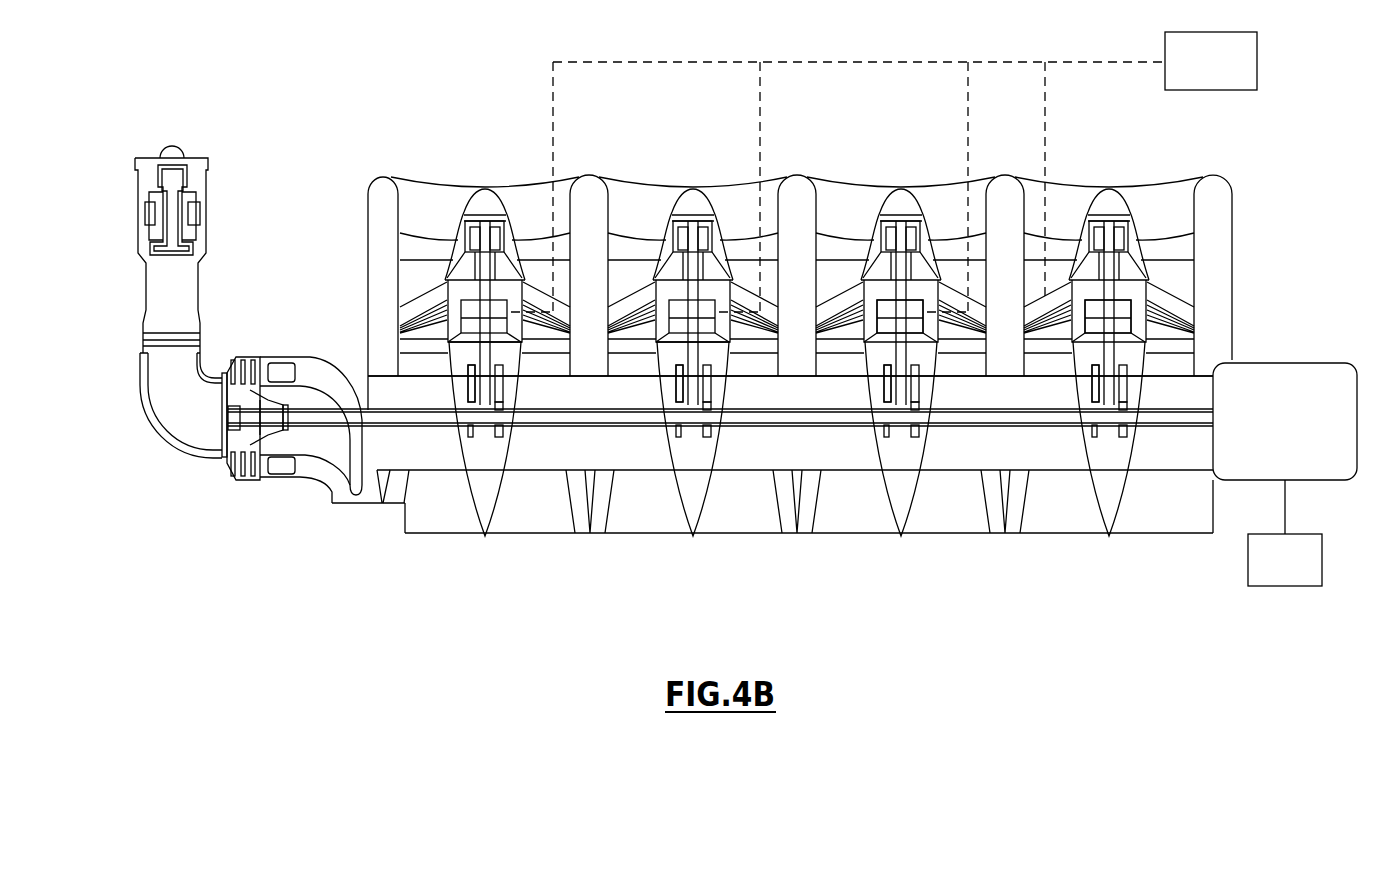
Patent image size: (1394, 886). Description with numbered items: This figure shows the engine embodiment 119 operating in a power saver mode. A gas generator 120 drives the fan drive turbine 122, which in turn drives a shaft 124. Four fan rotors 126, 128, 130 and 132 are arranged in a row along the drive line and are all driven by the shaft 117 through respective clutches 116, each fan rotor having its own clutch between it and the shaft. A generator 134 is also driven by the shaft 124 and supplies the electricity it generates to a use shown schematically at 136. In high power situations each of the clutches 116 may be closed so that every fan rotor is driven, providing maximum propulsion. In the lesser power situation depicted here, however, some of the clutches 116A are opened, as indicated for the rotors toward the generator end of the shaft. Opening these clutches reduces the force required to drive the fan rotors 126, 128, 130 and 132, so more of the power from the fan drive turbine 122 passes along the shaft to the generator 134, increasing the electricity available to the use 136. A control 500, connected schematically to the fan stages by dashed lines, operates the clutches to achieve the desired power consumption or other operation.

The clutch 116 is at (522, 342).
The opened clutch 116A is at (1160, 306).
The shaft 117 is at (438, 435).
The engine embodiment 119 is at (375, 150).
The gas generator 120 is at (235, 200).
The fan drive turbine 122 is at (253, 465).
The shaft 124 is at (415, 420).
The fan rotor 126 is at (425, 240).
The fan rotor 128 is at (633, 245).
The fan rotor 130 is at (840, 245).
The fan rotor 132 is at (1045, 245).
The generator 134 is at (1272, 378).
The use 136 is at (1292, 552).
The control 500 is at (1191, 76).